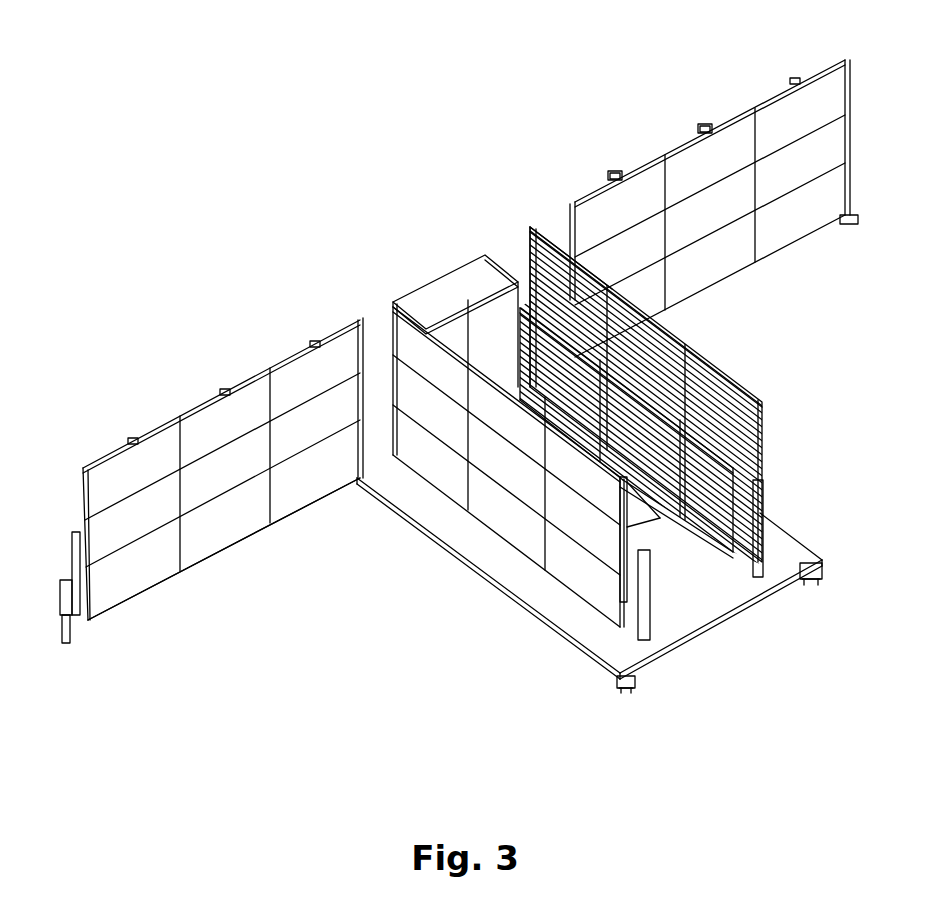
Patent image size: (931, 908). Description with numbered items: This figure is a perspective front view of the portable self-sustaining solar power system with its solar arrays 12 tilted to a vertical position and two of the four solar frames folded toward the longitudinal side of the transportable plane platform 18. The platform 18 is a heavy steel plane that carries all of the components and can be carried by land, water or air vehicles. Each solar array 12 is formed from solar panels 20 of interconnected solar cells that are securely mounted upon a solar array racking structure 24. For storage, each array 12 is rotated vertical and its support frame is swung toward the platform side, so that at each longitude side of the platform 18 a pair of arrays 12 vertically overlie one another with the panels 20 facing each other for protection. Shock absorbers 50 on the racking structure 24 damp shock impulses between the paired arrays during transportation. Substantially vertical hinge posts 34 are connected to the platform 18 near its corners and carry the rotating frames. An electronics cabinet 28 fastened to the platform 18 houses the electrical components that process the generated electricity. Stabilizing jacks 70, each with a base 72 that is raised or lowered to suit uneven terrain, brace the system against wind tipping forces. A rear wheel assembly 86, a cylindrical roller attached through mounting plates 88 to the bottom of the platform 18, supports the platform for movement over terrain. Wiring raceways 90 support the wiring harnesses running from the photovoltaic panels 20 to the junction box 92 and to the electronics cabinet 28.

The solar array 12 is at (298, 551).
The transportable plane platform 18 is at (670, 625).
The solar panel 20 is at (130, 575).
The solar array racking structure 24 is at (83, 480).
The electronics cabinet 28 is at (455, 292).
The vertical hinge post 34 is at (770, 512).
The shock absorber 50 is at (712, 125).
The stabilizing jack 70 is at (66, 618).
The base 72 is at (70, 636).
The rear wheel assembly 86 is at (818, 580).
The mounting plate 88 is at (813, 580).
The wiring raceway 90 is at (714, 560).
The junction box 92 is at (548, 228).